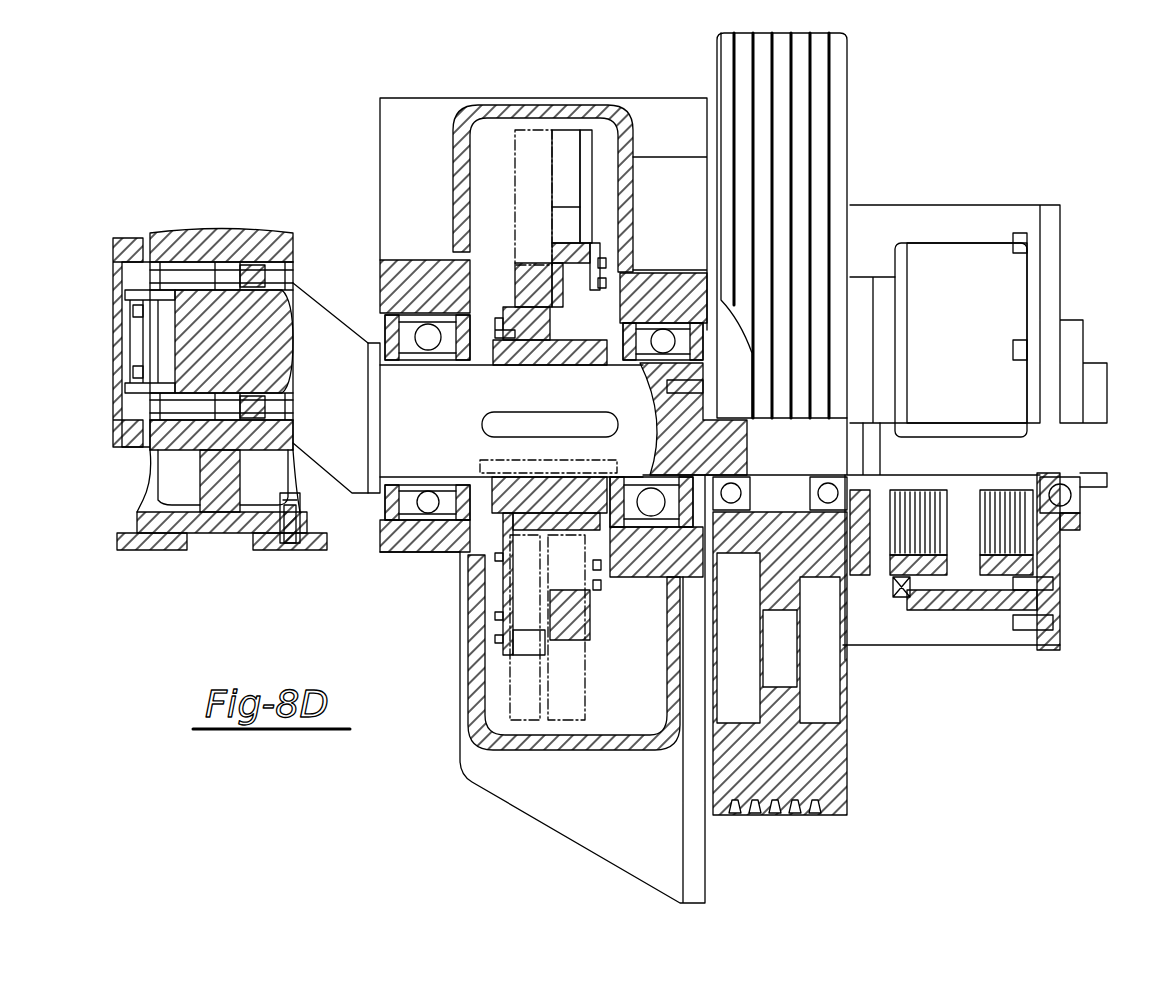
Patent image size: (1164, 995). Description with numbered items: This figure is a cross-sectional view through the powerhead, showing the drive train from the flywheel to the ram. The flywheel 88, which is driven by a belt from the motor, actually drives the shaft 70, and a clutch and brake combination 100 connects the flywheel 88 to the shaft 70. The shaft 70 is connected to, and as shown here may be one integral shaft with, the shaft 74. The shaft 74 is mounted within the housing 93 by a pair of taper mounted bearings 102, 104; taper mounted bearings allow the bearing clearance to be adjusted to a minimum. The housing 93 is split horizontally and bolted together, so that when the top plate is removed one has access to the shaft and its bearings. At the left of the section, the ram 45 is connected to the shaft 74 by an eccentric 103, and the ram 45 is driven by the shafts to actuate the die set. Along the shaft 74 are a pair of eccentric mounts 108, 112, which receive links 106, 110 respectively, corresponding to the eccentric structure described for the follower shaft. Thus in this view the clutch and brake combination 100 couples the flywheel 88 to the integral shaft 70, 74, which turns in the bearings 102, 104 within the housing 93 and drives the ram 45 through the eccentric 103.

The ram 45 is at (243, 231).
The shaft 70 is at (965, 469).
The shaft 74 is at (560, 399).
The flywheel 88 is at (815, 753).
The housing 93 is at (451, 138).
The clutch and brake combination 100 is at (1040, 552).
The taper mounted bearing 102 is at (363, 337).
The eccentric 103 is at (207, 344).
The taper mounted bearing 104 is at (661, 343).
The link 106 is at (520, 205).
The eccentric mount 108 is at (520, 257).
The link 110 is at (567, 163).
The eccentric mount 112 is at (583, 243).